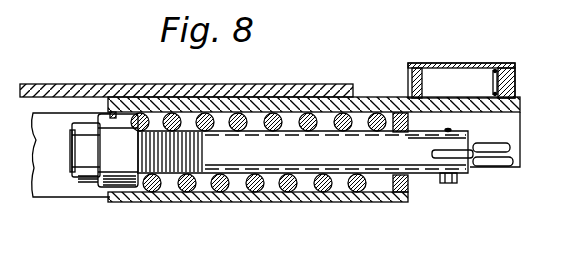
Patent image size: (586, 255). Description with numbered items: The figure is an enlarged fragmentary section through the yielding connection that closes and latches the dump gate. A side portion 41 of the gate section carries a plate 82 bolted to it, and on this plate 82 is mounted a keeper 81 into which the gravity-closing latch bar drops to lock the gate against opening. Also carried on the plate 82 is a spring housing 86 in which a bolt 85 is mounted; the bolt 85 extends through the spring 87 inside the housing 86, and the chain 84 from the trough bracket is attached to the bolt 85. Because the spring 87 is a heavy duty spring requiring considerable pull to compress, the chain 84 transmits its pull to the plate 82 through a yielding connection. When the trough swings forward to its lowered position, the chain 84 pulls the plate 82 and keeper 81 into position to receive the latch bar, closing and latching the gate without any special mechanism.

The side portion 41 is at (88, 84).
The keeper 81 is at (508, 64).
The plate 82 is at (381, 101).
The chain 84 is at (489, 166).
The bolt 85 is at (412, 172).
The spring housing 86 is at (165, 194).
The spring 87 is at (327, 196).